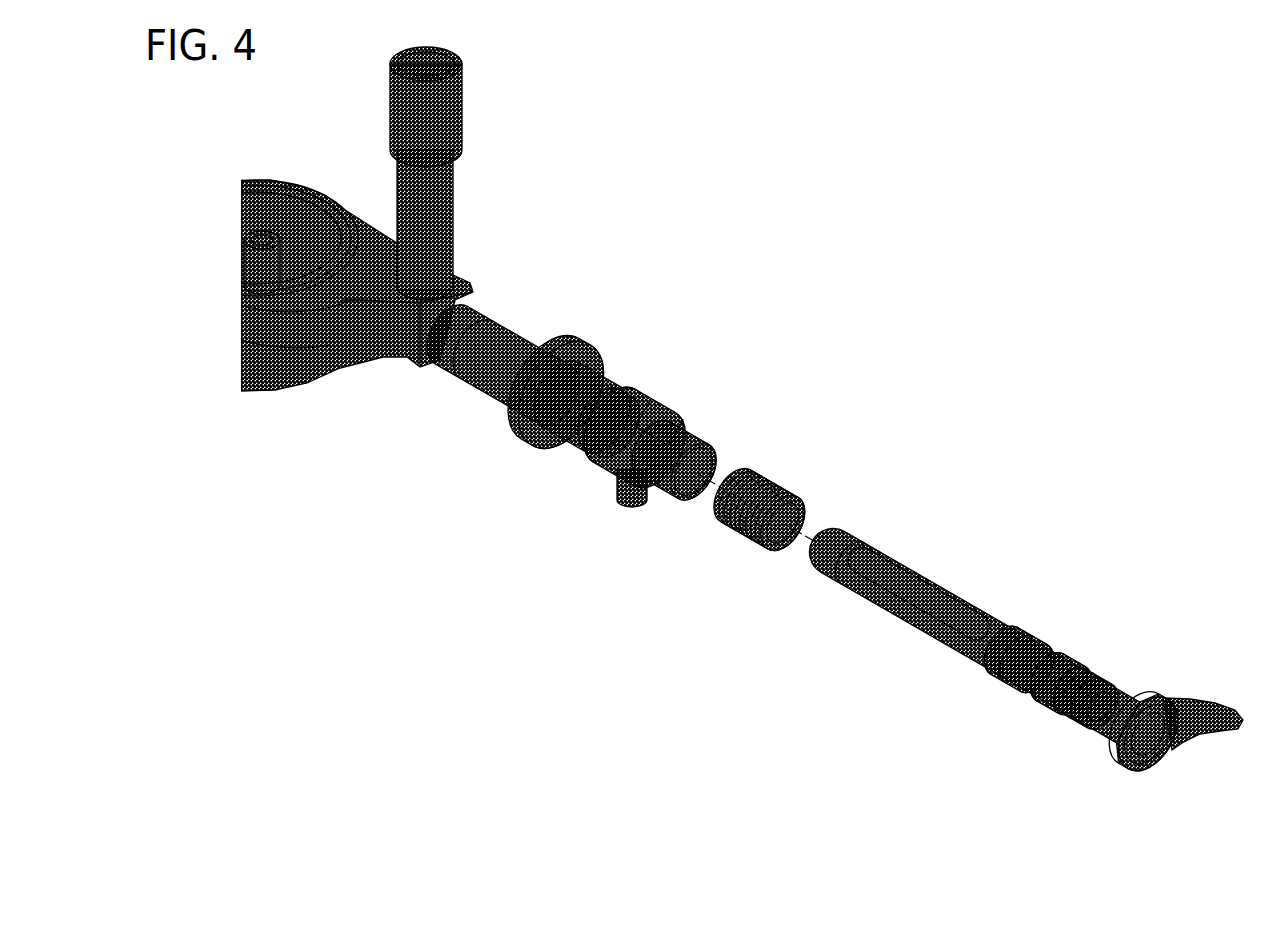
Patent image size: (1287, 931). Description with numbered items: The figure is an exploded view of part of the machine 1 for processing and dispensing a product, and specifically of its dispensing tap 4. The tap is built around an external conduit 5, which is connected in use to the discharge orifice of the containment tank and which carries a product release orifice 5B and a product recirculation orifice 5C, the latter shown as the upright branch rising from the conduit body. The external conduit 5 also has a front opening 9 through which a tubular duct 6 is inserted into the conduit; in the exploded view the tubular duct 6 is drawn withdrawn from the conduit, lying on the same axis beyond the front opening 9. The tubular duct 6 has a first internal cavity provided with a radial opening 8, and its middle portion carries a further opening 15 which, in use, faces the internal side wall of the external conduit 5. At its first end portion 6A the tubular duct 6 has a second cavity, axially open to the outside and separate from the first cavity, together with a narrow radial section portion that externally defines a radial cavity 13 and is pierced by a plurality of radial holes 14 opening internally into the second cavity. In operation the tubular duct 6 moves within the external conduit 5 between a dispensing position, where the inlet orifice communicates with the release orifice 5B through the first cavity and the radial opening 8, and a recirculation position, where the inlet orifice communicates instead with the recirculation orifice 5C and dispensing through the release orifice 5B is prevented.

The machine 1 is at (697, 416).
The dispensing tap 4 is at (504, 228).
The external conduit 5 is at (569, 451).
The product release orifice 5B is at (622, 514).
The product recirculation orifice 5C is at (431, 66).
The tubular duct 6 is at (846, 603).
The first end portion 6A is at (1119, 773).
The radial opening 8 is at (1060, 641).
The front opening 9 is at (689, 490).
The radial cavity 13 is at (1051, 719).
The radial holes 14 is at (1077, 667).
The further opening 15 is at (999, 622).